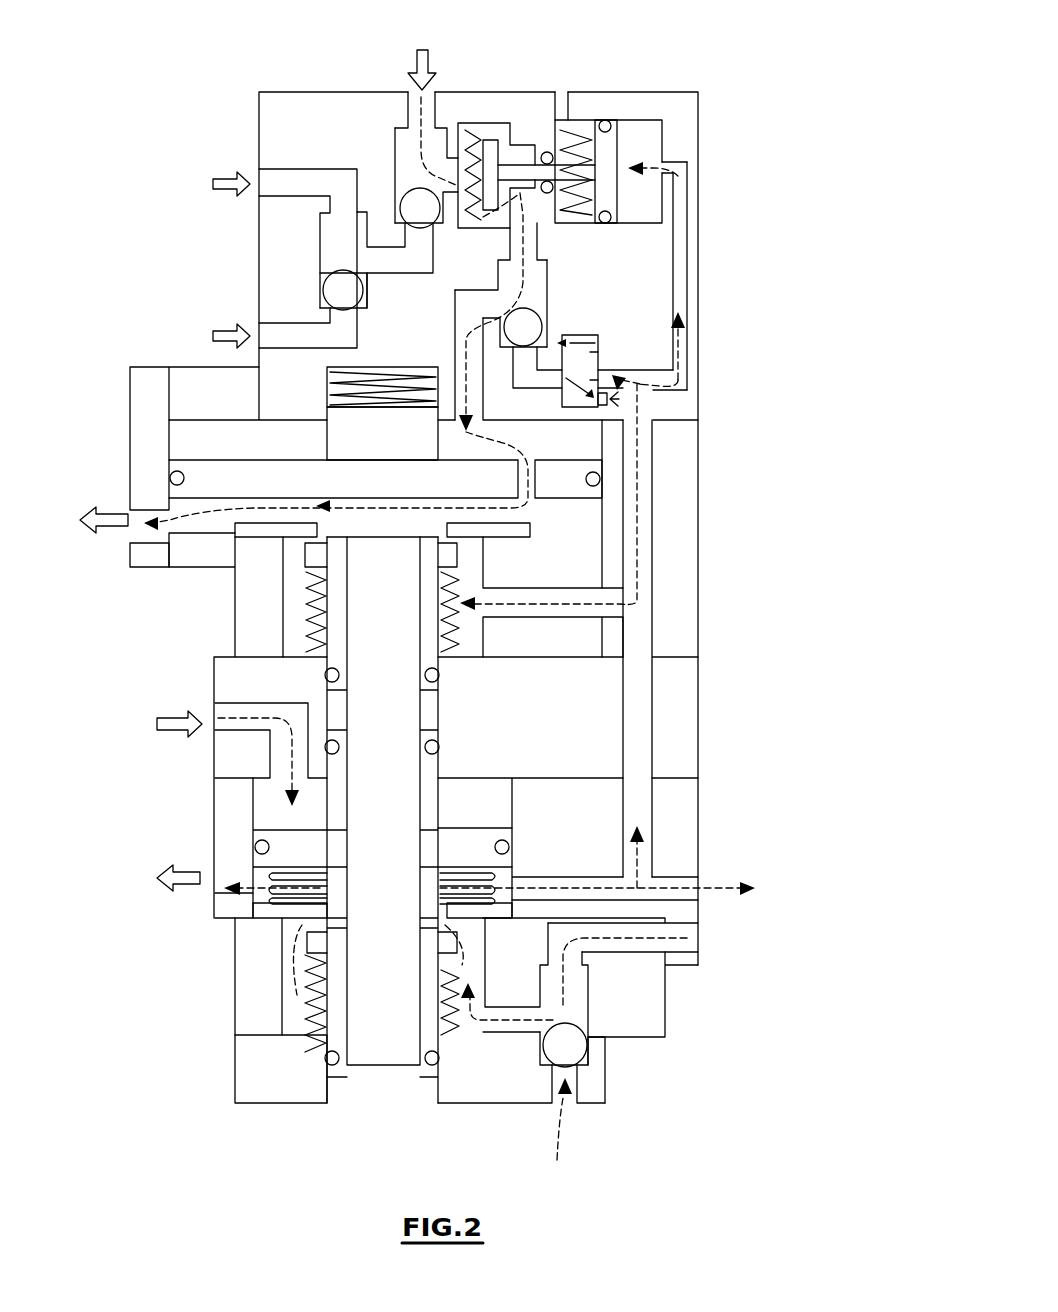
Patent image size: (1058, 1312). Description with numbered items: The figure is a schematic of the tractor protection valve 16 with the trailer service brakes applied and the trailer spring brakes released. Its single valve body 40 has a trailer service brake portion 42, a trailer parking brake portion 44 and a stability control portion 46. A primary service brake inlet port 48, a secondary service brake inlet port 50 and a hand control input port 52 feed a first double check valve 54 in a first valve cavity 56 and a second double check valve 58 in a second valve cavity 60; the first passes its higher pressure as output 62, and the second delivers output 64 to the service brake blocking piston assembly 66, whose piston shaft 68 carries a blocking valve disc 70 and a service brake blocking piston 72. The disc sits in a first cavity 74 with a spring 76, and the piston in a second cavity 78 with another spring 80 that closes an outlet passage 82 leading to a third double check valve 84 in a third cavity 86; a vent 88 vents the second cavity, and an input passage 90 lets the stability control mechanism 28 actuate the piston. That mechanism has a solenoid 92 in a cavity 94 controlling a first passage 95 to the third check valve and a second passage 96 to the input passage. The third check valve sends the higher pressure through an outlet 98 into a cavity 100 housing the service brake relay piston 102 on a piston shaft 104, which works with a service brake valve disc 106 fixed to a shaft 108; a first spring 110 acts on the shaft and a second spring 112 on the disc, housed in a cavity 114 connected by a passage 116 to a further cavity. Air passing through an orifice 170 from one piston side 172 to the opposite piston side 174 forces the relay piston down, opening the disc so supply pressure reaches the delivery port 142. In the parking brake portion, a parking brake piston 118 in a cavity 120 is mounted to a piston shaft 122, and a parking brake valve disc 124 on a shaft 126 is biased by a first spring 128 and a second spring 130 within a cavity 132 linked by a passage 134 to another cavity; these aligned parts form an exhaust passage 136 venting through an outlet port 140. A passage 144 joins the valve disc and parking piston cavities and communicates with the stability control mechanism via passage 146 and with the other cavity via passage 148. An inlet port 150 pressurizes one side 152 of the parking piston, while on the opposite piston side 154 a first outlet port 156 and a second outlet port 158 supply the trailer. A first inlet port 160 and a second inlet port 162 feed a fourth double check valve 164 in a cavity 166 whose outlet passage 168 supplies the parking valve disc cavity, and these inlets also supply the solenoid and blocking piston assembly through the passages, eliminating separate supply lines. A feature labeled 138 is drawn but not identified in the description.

The tractor protection valve 16 is at (794, 74).
The stability control mechanism 28 is at (618, 355).
The valve body 40 is at (280, 138).
The trailer service brake portion 42 is at (232, 266).
The trailer parking brake portion 44 is at (208, 1034).
The stability control portion 46 is at (715, 369).
The primary service brake inlet port 48 is at (413, 95).
The secondary service brake inlet port 50 is at (273, 182).
The hand control input port 52 is at (272, 337).
The first double check valve 54 is at (340, 288).
The first valve cavity 56 is at (337, 242).
The second double check valve 58 is at (413, 203).
The second valve cavity 60 is at (407, 148).
The output 62 is at (418, 262).
The output 64 is at (448, 160).
The service brake blocking piston assembly 66 is at (604, 107).
The piston shaft 68 is at (520, 157).
The blocking valve disc 70 is at (490, 142).
The service brake blocking piston 72 is at (610, 145).
The first cavity 74 is at (463, 230).
The spring 76 is at (472, 140).
The second cavity 78 is at (645, 148).
The spring 80 is at (582, 213).
The outlet passage 82 is at (517, 245).
The third double check valve 84 is at (532, 327).
The third cavity 86 is at (533, 292).
The vent 88 is at (570, 102).
The input passage 90 is at (678, 258).
The solenoid 92 is at (587, 340).
The cavity 94 is at (618, 362).
The first passage 95 is at (542, 380).
The second passage 96 is at (678, 387).
The outlet 98 is at (453, 310).
The cavity 100 is at (190, 440).
The service brake relay piston 102 is at (200, 472).
The piston shaft 104 is at (343, 433).
The service brake valve disc 106 is at (447, 555).
The shaft 108 is at (337, 610).
The first spring 110 is at (327, 377).
The second spring 112 is at (465, 640).
The cavity 114 is at (287, 568).
The passage 116 is at (317, 527).
The parking brake piston 118 is at (490, 837).
The cavity 120 is at (478, 805).
The piston shaft 122 is at (443, 793).
The parking brake valve disc 124 is at (310, 938).
The shaft 126 is at (465, 965).
The first spring 128 is at (493, 887).
The second spring 130 is at (305, 992).
The cavity 132 is at (292, 975).
The passage 134 is at (277, 910).
The exhaust passage 136 is at (393, 1037).
The housing bottom 138 is at (327, 1097).
The outlet port 140 is at (653, 973).
The delivery port 142 is at (291, 503).
The passage 144 is at (592, 600).
The passage 146 is at (643, 520).
The passage 148 is at (635, 782).
The inlet port 150 is at (217, 727).
The one side 152 is at (272, 827).
The opposite piston side 154 is at (253, 873).
The first outlet port 156 is at (223, 878).
The second outlet port 158 is at (692, 883).
The first inlet port 160 is at (690, 930).
The second inlet port 162 is at (565, 1100).
The fourth double check valve 164 is at (575, 1047).
The cavity 166 is at (578, 995).
The outlet passage 168 is at (512, 1027).
The orifice 170 is at (528, 490).
The piston side 172 is at (548, 460).
The opposite piston side 174 is at (587, 498).